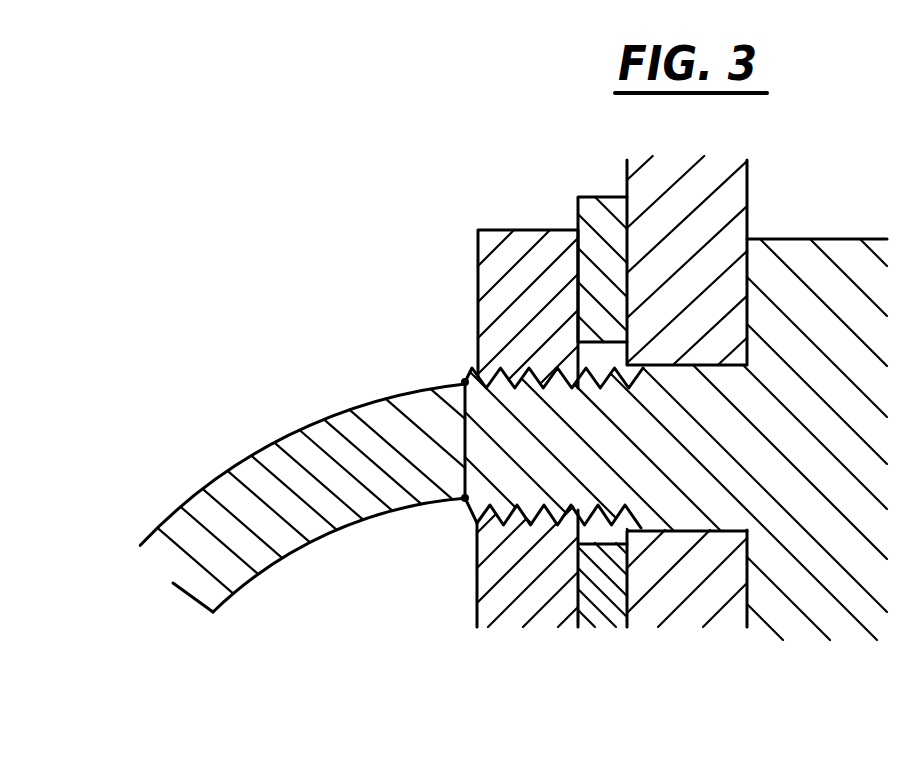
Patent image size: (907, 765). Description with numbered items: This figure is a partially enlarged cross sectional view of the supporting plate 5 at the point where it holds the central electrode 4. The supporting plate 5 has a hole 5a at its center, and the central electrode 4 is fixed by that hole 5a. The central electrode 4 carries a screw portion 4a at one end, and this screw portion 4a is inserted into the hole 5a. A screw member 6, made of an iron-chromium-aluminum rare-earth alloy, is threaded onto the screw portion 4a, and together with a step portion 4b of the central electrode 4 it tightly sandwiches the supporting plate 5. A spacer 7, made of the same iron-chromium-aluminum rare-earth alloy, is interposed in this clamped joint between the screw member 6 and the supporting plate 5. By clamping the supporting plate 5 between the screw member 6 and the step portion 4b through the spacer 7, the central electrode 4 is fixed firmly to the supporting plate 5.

The central electrode 4 is at (803, 268).
The screw portion 4a is at (500, 368).
The step portion 4b is at (748, 568).
The supporting plate 5 is at (690, 192).
The hole 5a is at (698, 528).
The screw member 6 is at (507, 255).
The spacer 7 is at (602, 218).